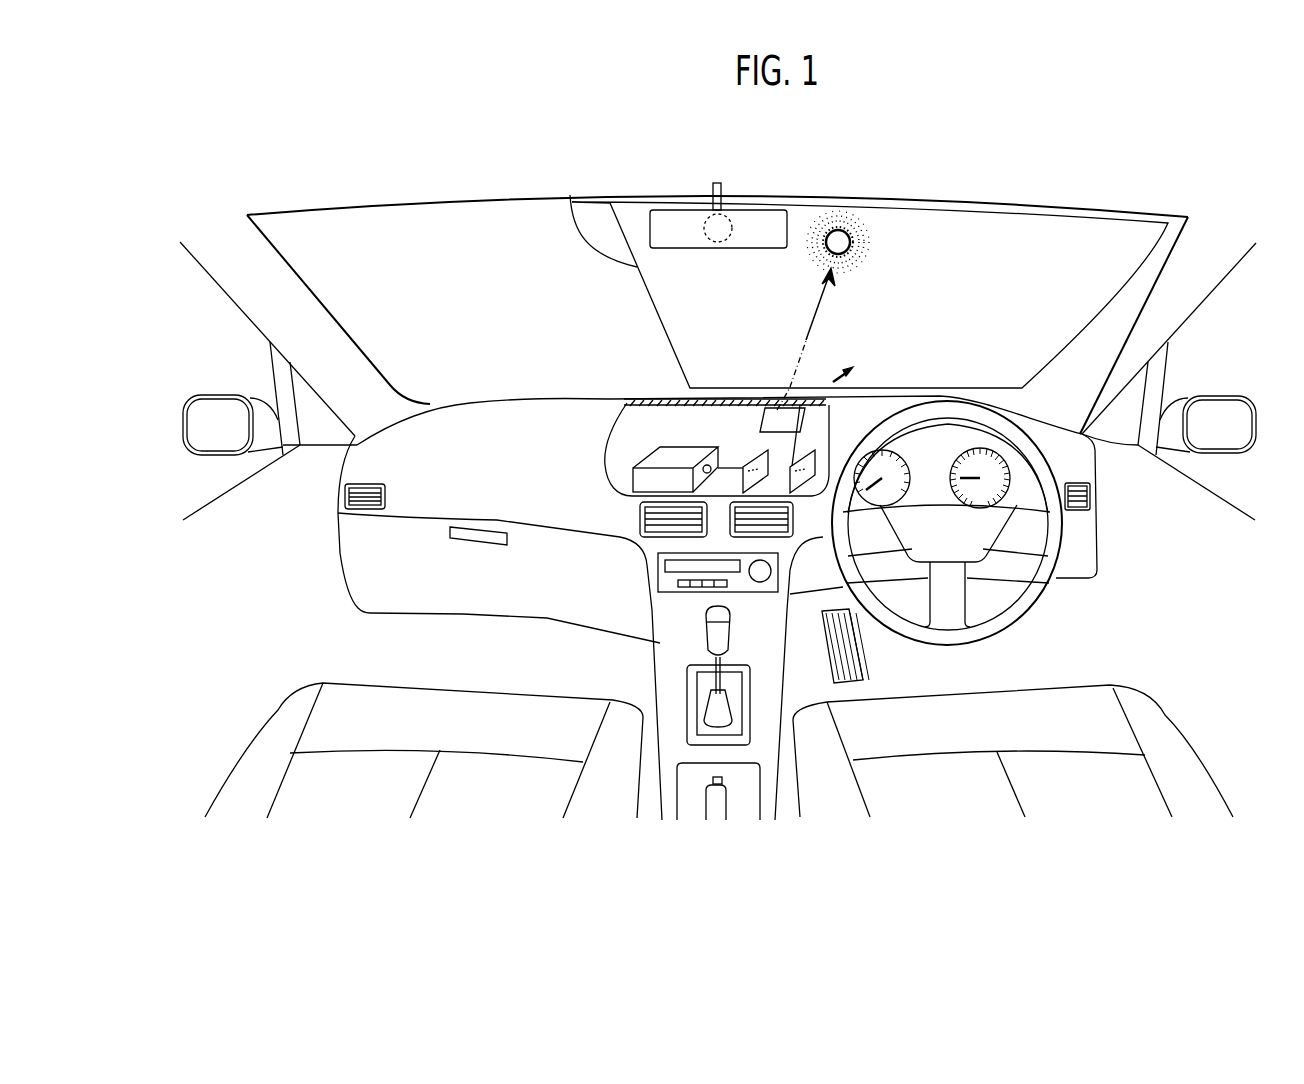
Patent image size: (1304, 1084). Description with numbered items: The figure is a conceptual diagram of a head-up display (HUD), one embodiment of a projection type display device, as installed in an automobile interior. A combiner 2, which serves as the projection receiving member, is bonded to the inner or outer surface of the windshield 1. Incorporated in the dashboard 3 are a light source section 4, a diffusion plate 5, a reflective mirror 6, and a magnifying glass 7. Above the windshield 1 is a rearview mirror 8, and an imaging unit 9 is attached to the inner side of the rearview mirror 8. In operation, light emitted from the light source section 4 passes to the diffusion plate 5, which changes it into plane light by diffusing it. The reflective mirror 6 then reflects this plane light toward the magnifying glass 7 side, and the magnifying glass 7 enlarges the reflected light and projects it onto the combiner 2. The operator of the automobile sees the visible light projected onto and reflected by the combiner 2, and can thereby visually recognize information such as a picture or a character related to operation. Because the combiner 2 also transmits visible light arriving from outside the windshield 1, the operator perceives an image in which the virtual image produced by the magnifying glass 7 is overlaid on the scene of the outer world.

The windshield 1 is at (420, 212).
The combiner 2 is at (572, 195).
The dashboard 3 is at (560, 410).
The light source section 4 is at (668, 450).
The diffusion plate 5 is at (746, 468).
The reflective mirror 6 is at (797, 466).
The magnifying glass 7 is at (782, 420).
The rearview mirror 8 is at (658, 210).
The imaging unit 9 is at (727, 227).